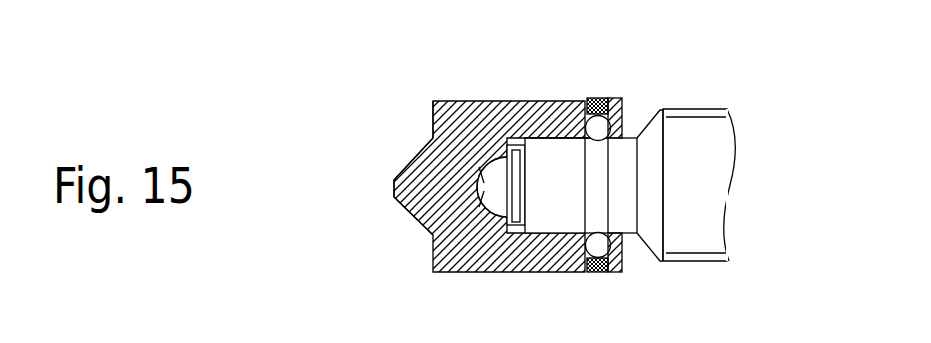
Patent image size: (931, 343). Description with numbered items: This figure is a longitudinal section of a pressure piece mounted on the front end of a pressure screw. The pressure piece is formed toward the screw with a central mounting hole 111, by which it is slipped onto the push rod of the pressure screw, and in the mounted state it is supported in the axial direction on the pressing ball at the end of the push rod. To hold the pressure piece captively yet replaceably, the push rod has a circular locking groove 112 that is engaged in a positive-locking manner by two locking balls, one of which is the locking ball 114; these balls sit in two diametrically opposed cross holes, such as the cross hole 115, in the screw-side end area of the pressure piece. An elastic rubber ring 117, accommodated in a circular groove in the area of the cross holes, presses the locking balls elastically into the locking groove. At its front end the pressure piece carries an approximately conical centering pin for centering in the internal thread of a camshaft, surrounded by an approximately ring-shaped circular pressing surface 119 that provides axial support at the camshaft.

The circular pressing surface 119 is at (431, 127).
The central mounting hole 111 is at (557, 141).
The circular locking groove 112 is at (600, 193).
The elastic rubber ring 117 is at (603, 122).
The locking ball 114 is at (620, 132).
The cross hole 115 is at (621, 270).